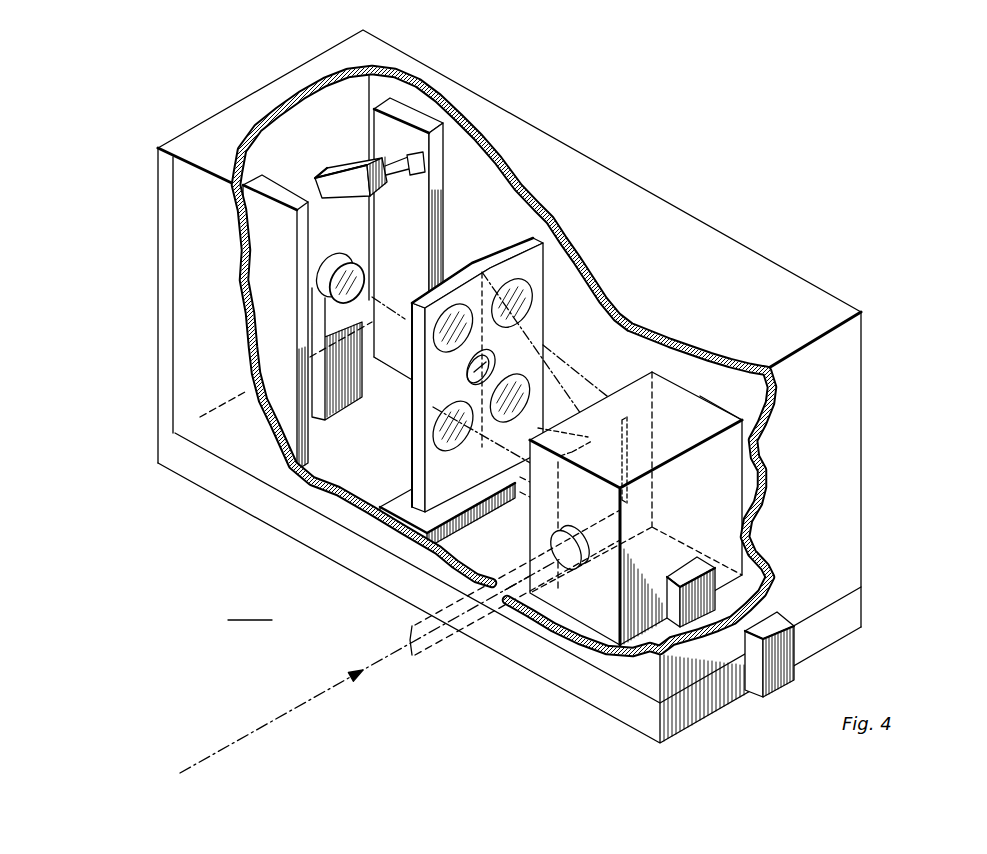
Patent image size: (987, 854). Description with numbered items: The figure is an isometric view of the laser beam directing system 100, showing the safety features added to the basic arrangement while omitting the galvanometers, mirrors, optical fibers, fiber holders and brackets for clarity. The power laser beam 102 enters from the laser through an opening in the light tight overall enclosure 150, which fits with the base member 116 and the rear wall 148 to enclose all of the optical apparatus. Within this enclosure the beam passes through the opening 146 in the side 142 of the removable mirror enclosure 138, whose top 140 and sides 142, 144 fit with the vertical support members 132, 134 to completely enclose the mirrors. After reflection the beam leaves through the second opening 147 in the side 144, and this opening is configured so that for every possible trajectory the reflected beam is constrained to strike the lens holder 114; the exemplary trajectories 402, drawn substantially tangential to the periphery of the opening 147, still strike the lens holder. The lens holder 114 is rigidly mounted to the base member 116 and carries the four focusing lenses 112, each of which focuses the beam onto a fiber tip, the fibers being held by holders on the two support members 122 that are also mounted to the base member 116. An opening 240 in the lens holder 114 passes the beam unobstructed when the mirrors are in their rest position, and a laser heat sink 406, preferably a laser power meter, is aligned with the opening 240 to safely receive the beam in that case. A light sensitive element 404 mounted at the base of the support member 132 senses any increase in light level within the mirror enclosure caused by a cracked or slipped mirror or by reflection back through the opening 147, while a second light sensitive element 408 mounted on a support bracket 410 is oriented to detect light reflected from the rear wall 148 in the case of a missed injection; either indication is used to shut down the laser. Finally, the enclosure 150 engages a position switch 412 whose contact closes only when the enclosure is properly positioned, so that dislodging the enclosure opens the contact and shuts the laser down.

The laser beam directing system 100 is at (250, 609).
The power laser beam 102 is at (449, 632).
The focusing lens 112 is at (472, 298).
The lens holder 114 is at (454, 393).
The base member 116 is at (250, 498).
The support member 122 is at (278, 192).
The vertical support member 132 is at (735, 487).
The vertical support member 134 is at (728, 417).
The mirror enclosure 138 is at (442, 571).
The top 140 is at (612, 497).
The side 142 is at (521, 560).
The side 144 is at (620, 405).
The opening 146 is at (588, 548).
The second opening 147 is at (538, 428).
The rear wall 148 is at (163, 292).
The overall enclosure 150 is at (690, 213).
The opening 240 is at (469, 374).
The exemplary trajectory 402 is at (530, 338).
The light sensitive element 404 is at (722, 578).
The laser heat sink 406 is at (357, 280).
The light sensitive element 408 is at (340, 168).
The support bracket 410 is at (393, 165).
The position switch 412 is at (785, 633).